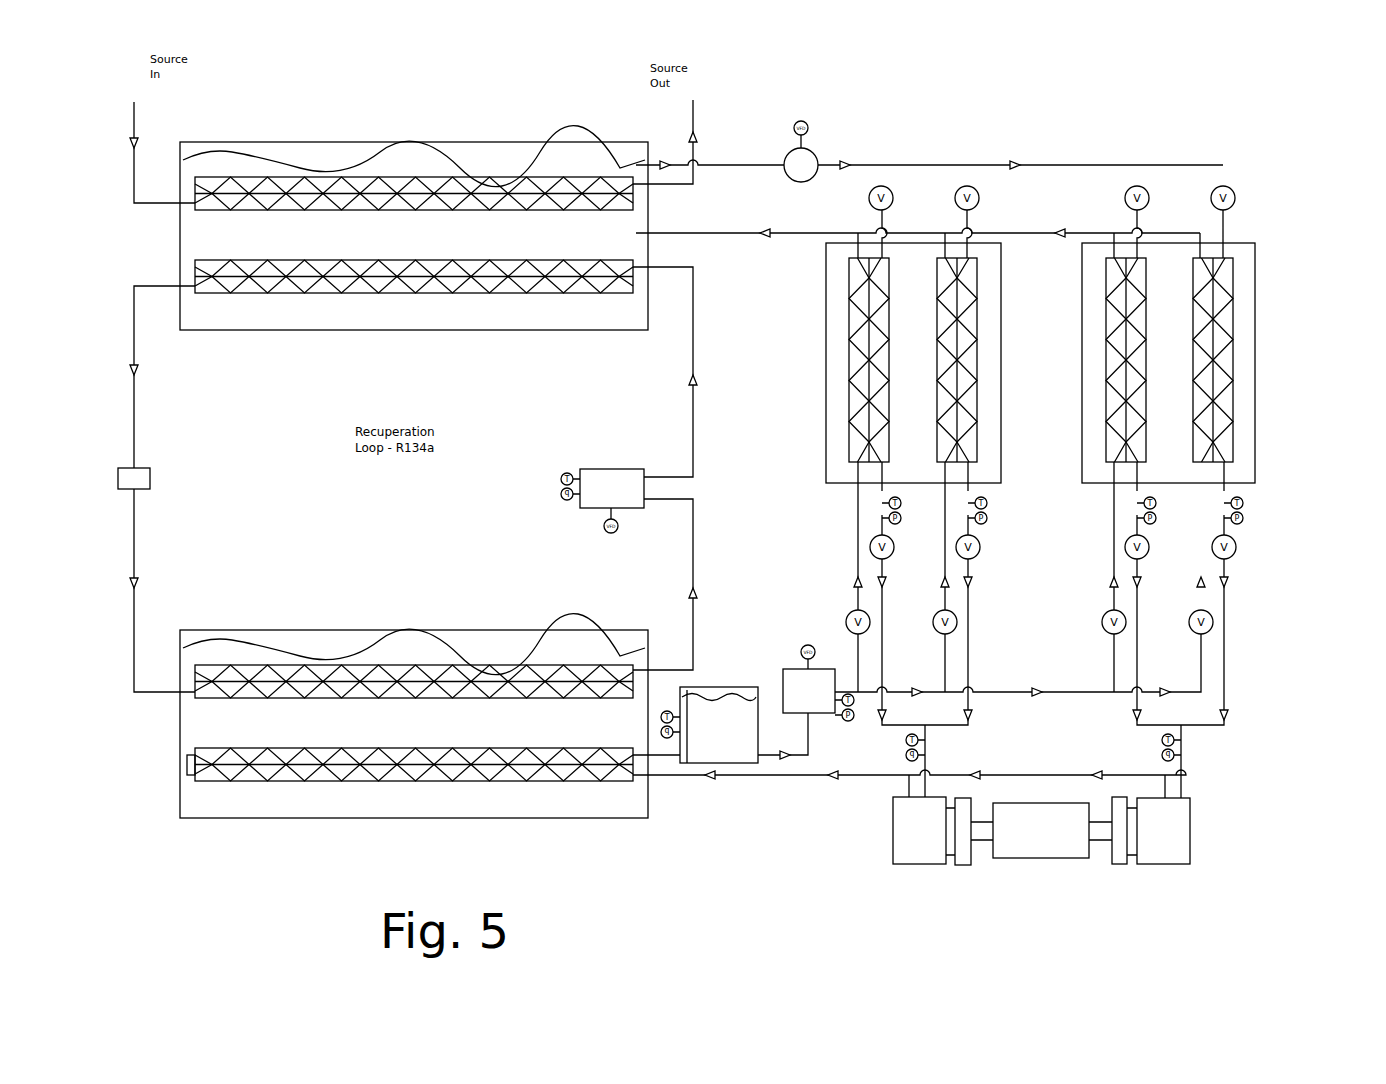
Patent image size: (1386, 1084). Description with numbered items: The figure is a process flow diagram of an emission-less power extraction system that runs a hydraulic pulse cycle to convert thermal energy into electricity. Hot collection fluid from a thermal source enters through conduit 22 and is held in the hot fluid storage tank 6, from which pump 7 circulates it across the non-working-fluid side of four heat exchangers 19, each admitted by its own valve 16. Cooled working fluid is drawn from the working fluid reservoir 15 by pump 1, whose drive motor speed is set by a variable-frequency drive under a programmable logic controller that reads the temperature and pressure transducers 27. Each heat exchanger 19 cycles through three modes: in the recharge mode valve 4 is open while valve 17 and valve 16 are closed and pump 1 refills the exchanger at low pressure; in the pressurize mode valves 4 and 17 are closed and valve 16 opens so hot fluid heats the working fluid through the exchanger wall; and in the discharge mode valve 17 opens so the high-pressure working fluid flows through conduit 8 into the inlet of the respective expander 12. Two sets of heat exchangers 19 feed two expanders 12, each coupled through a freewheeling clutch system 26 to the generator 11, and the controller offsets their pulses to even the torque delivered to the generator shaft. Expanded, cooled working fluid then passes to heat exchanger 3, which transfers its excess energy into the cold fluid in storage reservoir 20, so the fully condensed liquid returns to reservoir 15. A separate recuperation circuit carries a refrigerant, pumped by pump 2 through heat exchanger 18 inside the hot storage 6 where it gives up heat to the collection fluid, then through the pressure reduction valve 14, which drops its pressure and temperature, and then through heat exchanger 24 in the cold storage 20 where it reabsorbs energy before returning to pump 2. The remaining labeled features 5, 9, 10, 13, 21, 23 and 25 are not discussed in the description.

The pump 1 is at (781, 668).
The pump 2 is at (647, 511).
The heat exchanger 3 is at (566, 784).
The valve 4 is at (959, 628).
The return line 5 is at (707, 244).
The hot fluid storage tank 6 is at (332, 332).
The pump 7 is at (815, 151).
The conduit 8 is at (972, 727).
The expander inlet line 9 is at (1186, 796).
The generator 10 is at (1049, 860).
The generator 11 is at (994, 864).
The expander 12 is at (891, 855).
The generator 13 is at (1087, 882).
The pressure reduction valve 14 is at (153, 478).
The working fluid reservoir 15 is at (729, 766).
The valve 16 is at (883, 186).
The valve 17 is at (976, 554).
The heat exchanger 18 is at (527, 297).
The heat exchanger 19 is at (933, 367).
The cold fluid storage reservoir 20 is at (410, 821).
The source heat exchanger 21 is at (489, 176).
The conduit 22 is at (137, 103).
The source out 23 is at (697, 102).
The heat exchanger 24 is at (407, 664).
The variable frequency drive 25 is at (604, 531).
The freewheeling clutch system 26 is at (956, 868).
The temperature and pressure transducers 27 is at (992, 519).